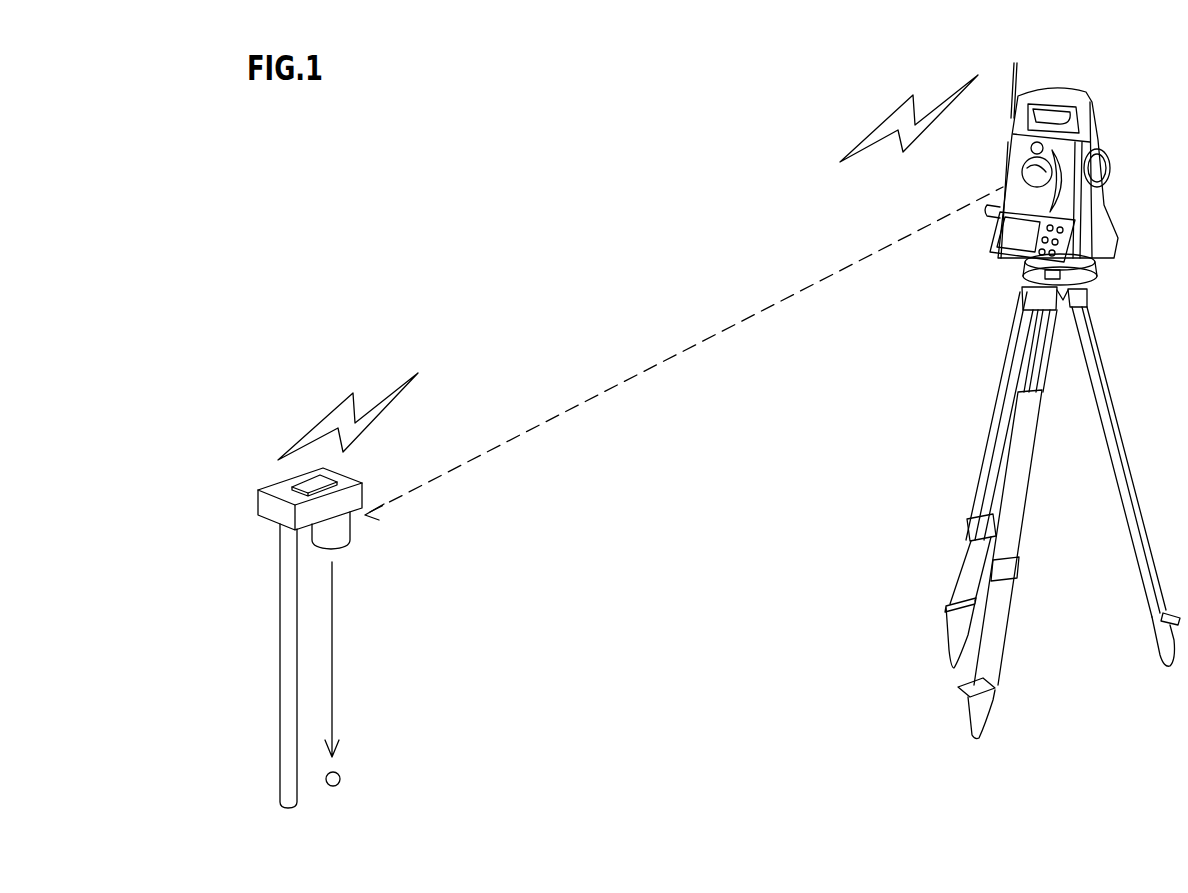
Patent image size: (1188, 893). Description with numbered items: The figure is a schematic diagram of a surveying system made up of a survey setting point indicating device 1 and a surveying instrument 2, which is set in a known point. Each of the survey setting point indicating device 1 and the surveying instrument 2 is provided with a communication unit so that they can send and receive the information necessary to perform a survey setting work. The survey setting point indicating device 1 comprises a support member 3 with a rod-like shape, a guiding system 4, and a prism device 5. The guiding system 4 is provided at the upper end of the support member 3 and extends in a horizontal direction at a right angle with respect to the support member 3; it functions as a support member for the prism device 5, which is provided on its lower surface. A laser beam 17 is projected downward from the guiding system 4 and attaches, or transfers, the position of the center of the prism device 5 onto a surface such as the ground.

The survey setting point indicating device 1 is at (315, 590).
The surveying instrument 2 is at (1124, 170).
The support member 3 is at (280, 708).
The guiding system 4 is at (348, 478).
The prism device 5 is at (352, 531).
The laser beam 17 is at (333, 658).